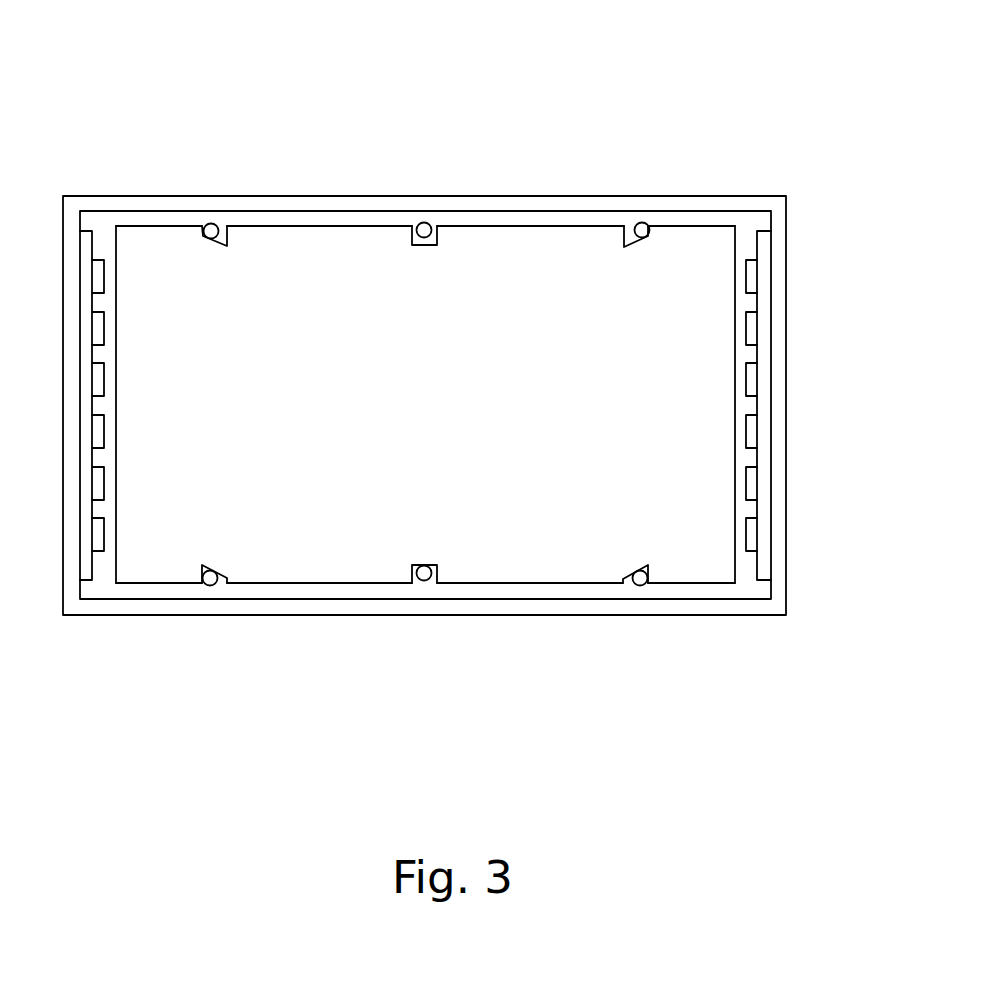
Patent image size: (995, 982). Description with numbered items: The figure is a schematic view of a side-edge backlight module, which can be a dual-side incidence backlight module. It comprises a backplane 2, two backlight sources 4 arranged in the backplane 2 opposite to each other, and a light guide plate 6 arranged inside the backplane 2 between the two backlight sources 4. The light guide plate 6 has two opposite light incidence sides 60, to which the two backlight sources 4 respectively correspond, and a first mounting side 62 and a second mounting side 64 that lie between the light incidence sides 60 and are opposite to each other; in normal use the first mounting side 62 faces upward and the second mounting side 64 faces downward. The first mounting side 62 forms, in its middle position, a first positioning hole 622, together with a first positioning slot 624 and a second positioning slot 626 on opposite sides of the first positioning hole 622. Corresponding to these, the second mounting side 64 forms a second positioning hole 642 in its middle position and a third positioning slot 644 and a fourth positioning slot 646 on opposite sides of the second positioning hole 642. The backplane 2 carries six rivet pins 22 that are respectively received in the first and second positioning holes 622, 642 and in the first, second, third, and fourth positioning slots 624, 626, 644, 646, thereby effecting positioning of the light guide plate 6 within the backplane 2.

The backplane 2 is at (127, 205).
The backlight source 4 is at (90, 270).
The light guide plate 6 is at (477, 407).
The rivet pin 22 is at (212, 582).
The light incidence side 60 is at (735, 267).
The first mounting side 62 is at (717, 227).
The second mounting side 64 is at (717, 585).
The first positioning hole 622 is at (435, 230).
The first positioning slot 624 is at (632, 230).
The second positioning slot 626 is at (225, 222).
The second positioning hole 642 is at (435, 582).
The third positioning slot 644 is at (633, 582).
The fourth positioning slot 646 is at (223, 582).